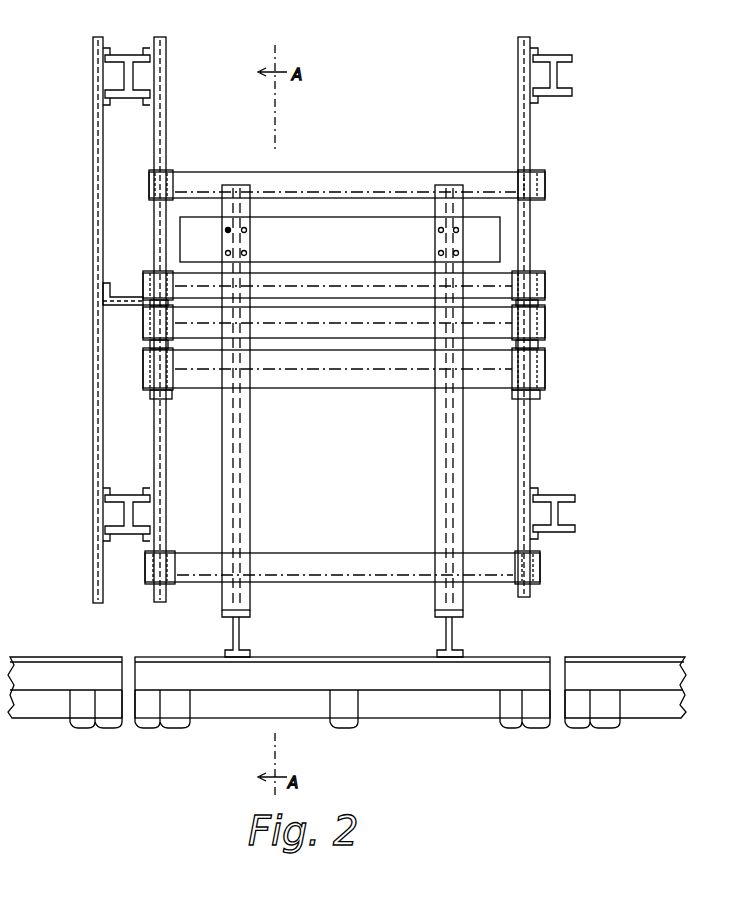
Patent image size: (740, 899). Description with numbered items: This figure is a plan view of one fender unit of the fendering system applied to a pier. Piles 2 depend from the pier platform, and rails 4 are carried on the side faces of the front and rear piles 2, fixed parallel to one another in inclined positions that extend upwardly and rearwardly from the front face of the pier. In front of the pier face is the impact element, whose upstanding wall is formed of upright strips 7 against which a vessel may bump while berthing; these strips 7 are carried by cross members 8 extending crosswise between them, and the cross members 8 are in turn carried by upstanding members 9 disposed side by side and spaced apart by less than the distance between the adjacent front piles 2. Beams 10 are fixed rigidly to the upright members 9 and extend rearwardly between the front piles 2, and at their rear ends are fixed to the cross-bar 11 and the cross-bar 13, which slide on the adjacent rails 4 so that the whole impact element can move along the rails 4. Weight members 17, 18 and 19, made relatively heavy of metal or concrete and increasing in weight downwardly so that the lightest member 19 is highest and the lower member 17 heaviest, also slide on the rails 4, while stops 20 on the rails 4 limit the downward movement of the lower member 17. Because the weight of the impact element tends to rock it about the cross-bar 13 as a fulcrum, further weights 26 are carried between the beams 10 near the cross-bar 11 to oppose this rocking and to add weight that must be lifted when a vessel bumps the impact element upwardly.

The piles 2 is at (125, 96).
The rails 4 is at (95, 318).
The upright strips 7 is at (83, 724).
The cross members 8 is at (310, 678).
The upstanding members 9 is at (252, 638).
The beams 10 is at (242, 443).
The cross-bar 11 is at (290, 175).
The cross-bar 13 is at (318, 555).
The weight member 17 is at (338, 376).
The weight member 18 is at (344, 336).
The weight member 19 is at (346, 300).
The stops 20 is at (147, 397).
The weights 26 is at (350, 249).